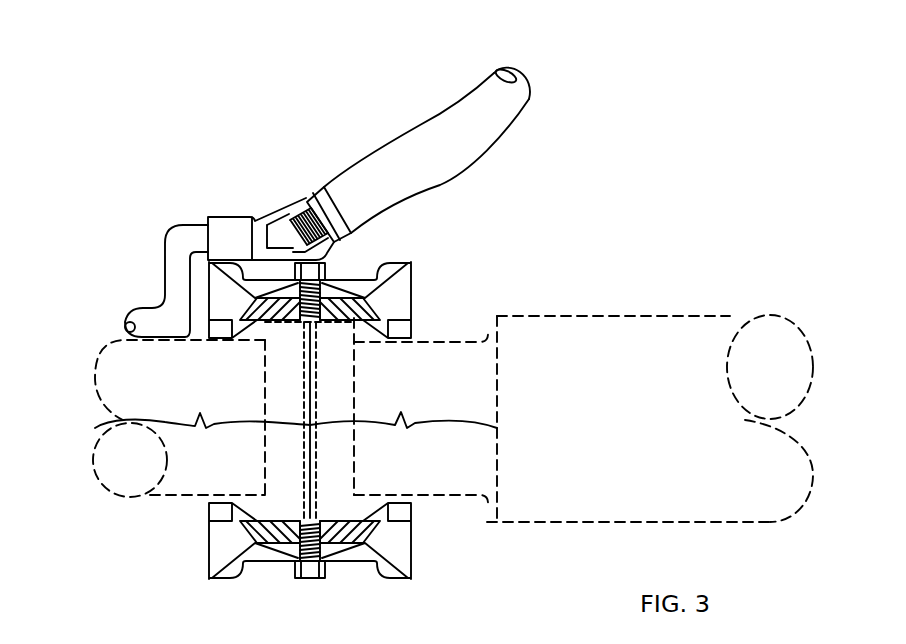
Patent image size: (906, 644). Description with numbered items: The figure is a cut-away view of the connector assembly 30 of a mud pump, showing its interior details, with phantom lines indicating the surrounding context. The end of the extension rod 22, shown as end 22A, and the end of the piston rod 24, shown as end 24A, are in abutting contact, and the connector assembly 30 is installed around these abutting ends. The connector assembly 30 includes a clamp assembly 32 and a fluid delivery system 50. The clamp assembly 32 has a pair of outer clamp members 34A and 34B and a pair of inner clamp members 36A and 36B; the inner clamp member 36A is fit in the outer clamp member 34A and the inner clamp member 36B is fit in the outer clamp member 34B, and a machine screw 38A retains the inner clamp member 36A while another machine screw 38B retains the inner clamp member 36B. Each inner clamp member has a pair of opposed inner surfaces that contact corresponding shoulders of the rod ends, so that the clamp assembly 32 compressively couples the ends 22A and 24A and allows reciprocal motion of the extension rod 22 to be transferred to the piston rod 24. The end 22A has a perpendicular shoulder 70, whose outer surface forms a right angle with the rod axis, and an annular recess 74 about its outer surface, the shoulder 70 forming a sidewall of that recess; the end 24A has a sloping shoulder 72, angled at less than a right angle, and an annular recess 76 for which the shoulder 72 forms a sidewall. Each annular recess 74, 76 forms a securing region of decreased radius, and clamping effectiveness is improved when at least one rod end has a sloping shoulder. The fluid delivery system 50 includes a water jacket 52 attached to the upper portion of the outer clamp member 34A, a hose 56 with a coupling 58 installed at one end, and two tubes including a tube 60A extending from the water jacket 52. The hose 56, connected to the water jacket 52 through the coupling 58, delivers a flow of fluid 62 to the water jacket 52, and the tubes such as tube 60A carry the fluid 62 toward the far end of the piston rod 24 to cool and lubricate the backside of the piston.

The extension rod 22 is at (643, 427).
The end of the extension rod 22A is at (421, 410).
The piston rod 24 is at (152, 397).
The end of the piston rod 24A is at (223, 417).
The connector assembly 30 is at (284, 57).
The clamp assembly 32 is at (462, 188).
The outer clamp member 34A is at (412, 278).
The outer clamp member 34B is at (382, 548).
The inner clamp member 36A is at (385, 313).
The inner clamp member 36B is at (378, 517).
The machine screw 38A is at (328, 266).
The machine screw 38B is at (310, 581).
The fluid delivery system 50 is at (233, 164).
The water jacket 52 is at (292, 205).
The hose 56 is at (360, 157).
The coupling 58 is at (316, 184).
The tube 60A is at (165, 267).
The fluid 62 is at (530, 58).
The perpendicular shoulder 70 is at (448, 324).
The sloping shoulder 72 is at (186, 319).
The annular recess 74 is at (345, 320).
The annular recess 76 is at (250, 328).